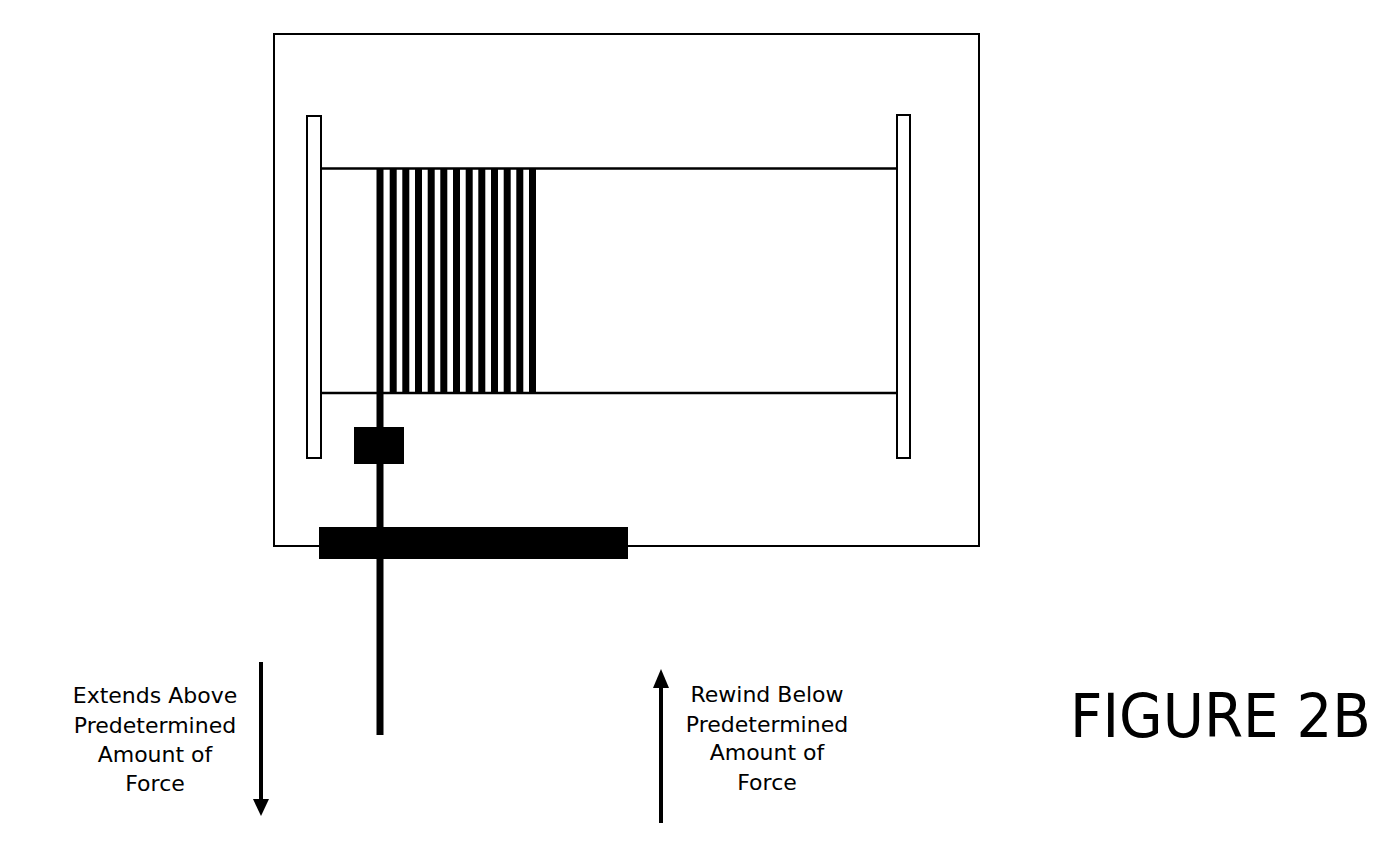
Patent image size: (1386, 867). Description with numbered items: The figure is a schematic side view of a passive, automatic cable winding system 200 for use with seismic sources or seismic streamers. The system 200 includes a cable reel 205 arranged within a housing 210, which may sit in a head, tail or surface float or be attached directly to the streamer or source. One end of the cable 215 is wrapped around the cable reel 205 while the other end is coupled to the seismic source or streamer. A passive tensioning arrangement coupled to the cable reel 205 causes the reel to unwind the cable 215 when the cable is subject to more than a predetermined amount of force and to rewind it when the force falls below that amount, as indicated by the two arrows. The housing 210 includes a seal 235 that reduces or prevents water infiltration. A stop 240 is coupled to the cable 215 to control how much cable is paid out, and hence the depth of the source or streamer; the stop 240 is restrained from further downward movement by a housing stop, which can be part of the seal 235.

The passive, automatic cable winding system 200 is at (1183, 111).
The cable reel 205 is at (603, 168).
The housing 210 is at (979, 275).
The cable 215 is at (383, 653).
The seal 235 is at (612, 560).
The stop 240 is at (404, 440).